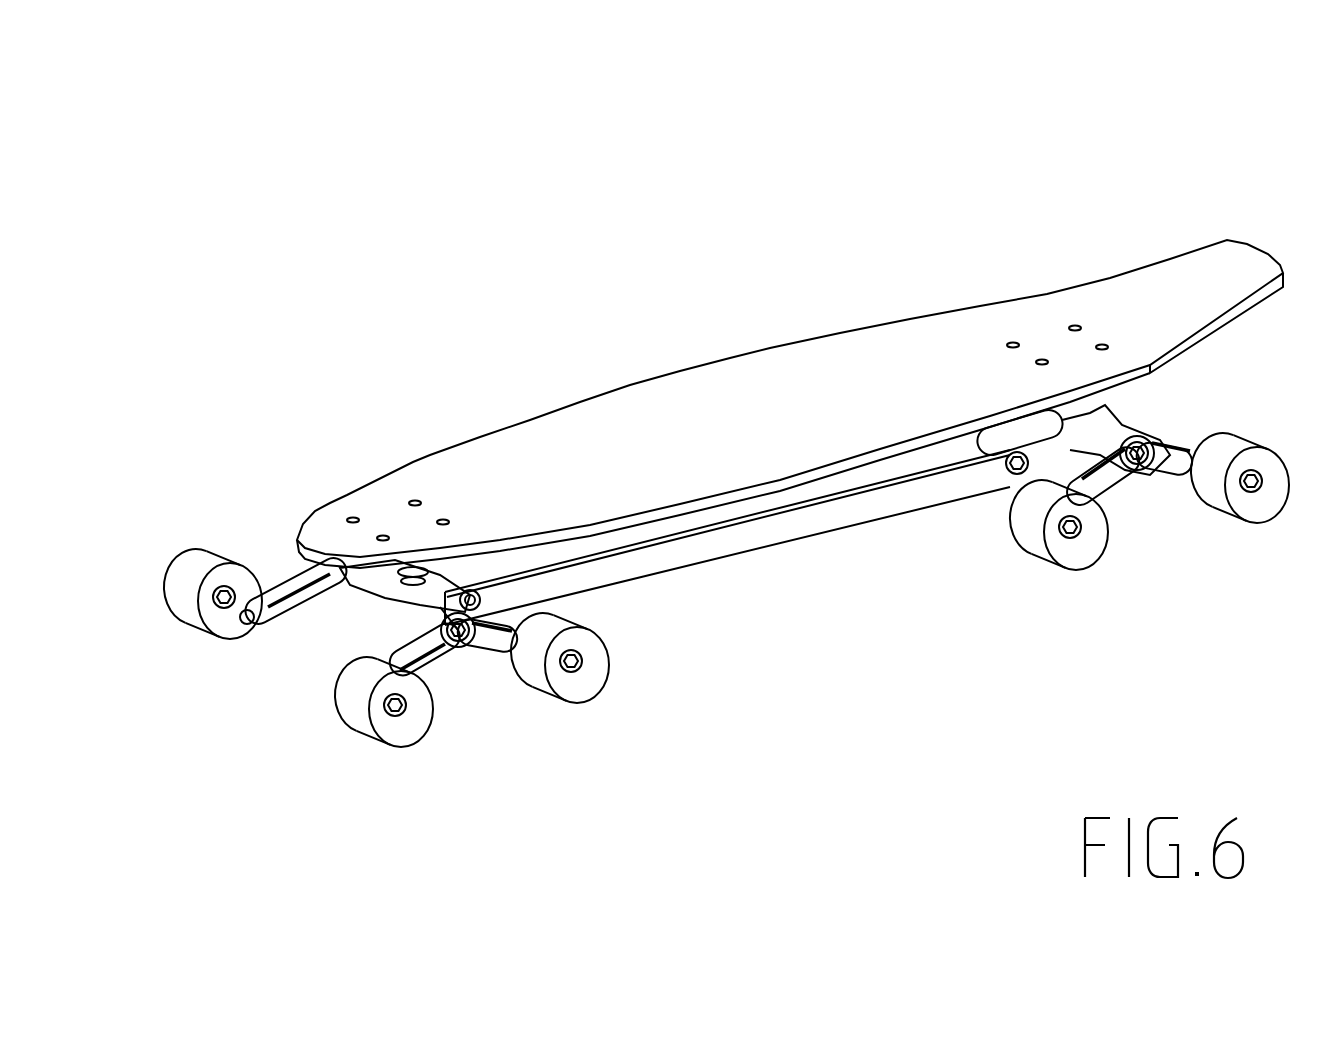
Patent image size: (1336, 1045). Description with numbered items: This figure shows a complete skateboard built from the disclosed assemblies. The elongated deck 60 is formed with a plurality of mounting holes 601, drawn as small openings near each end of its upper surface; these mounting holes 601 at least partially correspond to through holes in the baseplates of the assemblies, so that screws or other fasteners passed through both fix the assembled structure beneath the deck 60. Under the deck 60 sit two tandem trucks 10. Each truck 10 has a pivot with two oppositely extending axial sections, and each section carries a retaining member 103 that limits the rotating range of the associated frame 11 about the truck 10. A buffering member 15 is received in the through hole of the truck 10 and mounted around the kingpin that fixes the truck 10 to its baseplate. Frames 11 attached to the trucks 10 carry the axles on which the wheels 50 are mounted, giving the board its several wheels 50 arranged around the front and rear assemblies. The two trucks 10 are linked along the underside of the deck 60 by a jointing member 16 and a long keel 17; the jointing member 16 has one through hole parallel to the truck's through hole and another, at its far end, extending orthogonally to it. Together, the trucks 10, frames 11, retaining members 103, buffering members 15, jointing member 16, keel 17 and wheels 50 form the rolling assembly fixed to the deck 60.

The truck 10 is at (411, 688).
The frame 11 is at (440, 650).
The buffering member 15 is at (432, 568).
The jointing member 16 is at (992, 441).
The keel 17 is at (830, 515).
The wheels 50 is at (595, 674).
The deck 60 is at (753, 427).
The mounting holes 601 is at (443, 520).
The retaining member 103 is at (440, 607).